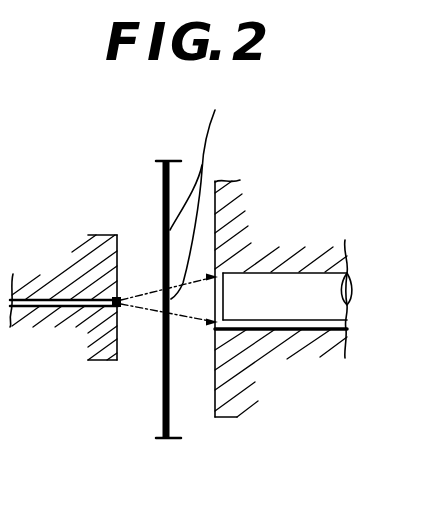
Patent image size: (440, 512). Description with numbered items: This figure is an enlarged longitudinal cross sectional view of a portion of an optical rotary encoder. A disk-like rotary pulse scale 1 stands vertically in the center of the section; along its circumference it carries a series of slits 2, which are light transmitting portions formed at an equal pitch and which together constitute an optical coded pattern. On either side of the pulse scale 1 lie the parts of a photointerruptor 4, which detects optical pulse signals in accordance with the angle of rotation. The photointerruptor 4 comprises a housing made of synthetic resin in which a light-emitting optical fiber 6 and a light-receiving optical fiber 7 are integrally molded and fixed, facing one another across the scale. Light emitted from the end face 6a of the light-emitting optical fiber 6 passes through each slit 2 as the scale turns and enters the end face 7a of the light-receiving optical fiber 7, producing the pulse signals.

The rotary pulse scale 1 is at (158, 181).
The slit 2 is at (204, 198).
The photointerruptor 4 is at (284, 389).
The light-emitting optical fiber 6 is at (70, 297).
The end face of the light-emitting optical fiber 6a is at (121, 303).
The light-receiving optical fiber 7 is at (300, 288).
The end face of the light-receiving optical fiber 7a is at (217, 322).